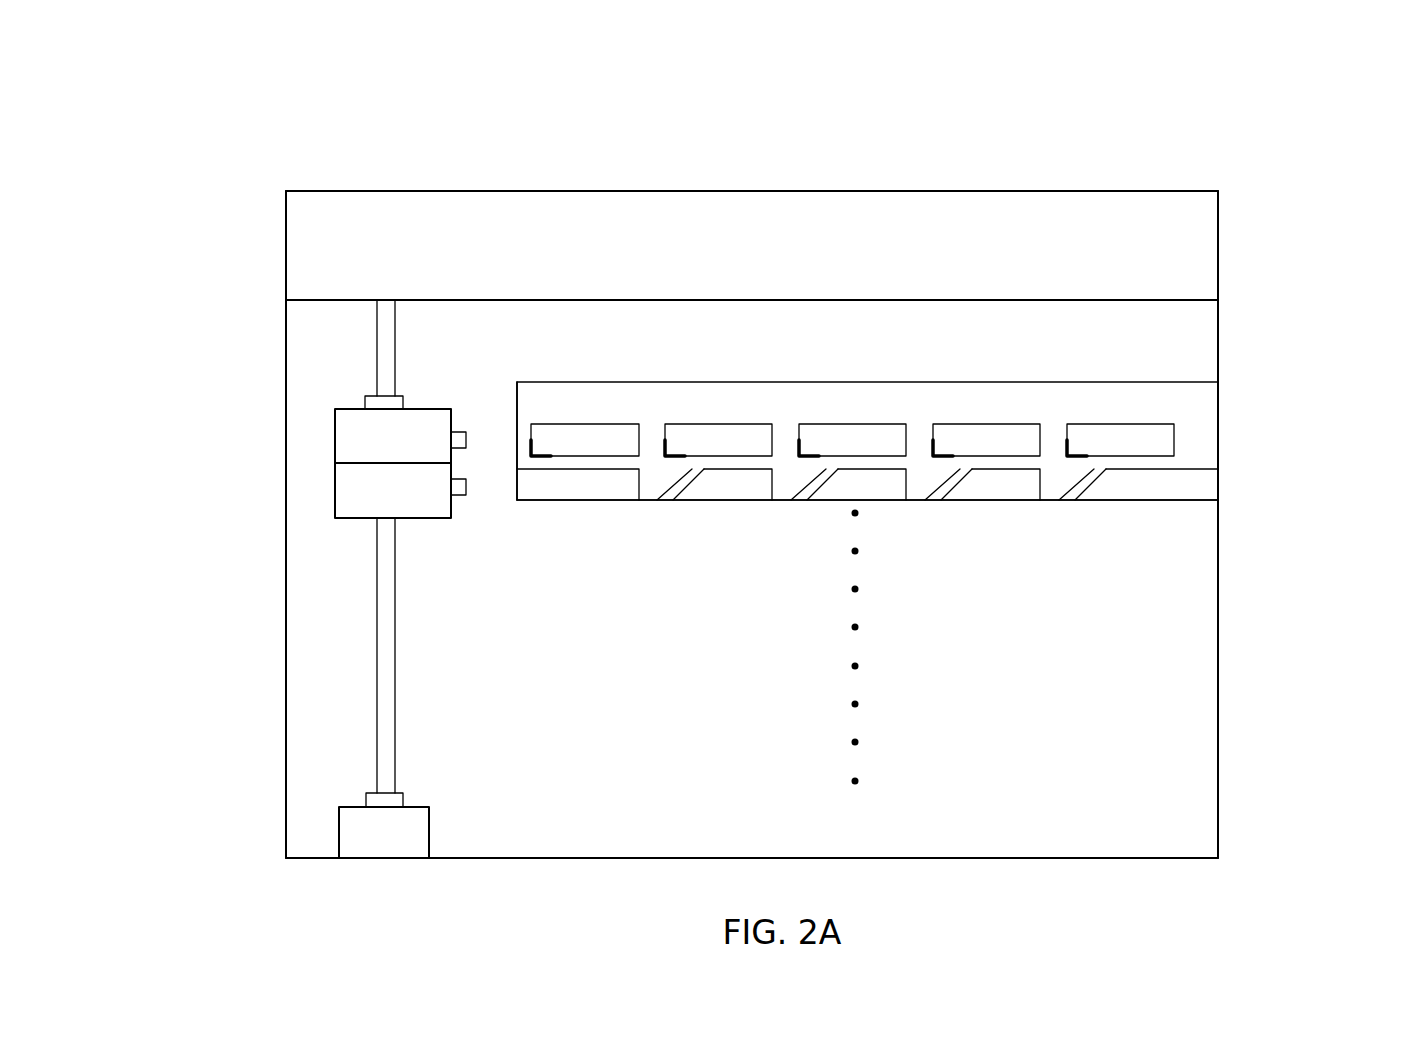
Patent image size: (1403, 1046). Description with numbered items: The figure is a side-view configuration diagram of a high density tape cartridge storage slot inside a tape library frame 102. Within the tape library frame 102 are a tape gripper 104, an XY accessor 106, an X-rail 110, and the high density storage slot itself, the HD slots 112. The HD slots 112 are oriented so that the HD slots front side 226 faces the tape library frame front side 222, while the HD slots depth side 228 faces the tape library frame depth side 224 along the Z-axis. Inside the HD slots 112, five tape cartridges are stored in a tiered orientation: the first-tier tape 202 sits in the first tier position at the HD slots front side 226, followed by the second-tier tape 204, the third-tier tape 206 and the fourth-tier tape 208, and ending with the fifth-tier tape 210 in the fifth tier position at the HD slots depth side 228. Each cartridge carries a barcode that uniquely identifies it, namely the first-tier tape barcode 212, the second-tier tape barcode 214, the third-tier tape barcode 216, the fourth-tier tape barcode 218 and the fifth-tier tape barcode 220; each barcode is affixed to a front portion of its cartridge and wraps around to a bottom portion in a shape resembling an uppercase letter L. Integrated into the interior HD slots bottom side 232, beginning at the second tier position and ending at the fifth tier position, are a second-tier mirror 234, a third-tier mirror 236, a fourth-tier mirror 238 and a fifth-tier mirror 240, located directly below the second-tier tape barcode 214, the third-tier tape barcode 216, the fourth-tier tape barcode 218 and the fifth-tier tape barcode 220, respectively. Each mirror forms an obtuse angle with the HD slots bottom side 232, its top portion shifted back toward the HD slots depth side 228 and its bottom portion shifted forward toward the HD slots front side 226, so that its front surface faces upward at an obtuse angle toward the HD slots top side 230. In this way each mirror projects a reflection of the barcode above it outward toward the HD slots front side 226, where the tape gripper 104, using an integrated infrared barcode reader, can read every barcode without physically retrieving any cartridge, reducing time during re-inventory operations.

The tape library frame 102 is at (286, 209).
The tape gripper 104 is at (335, 430).
The XY accessor 106 is at (377, 655).
The X-rail 110 is at (383, 847).
The HD slots 112 is at (557, 382).
The tier 1 tape 202 is at (586, 424).
The tier 2 tape 204 is at (717, 424).
The tier 3 tape 206 is at (851, 424).
The tier 4 tape 208 is at (985, 424).
The tier 5 tape 210 is at (1117, 424).
The tier 1 tape barcode 212 is at (530, 457).
The tier 2 tape barcode 214 is at (663, 455).
The tier 3 tape barcode 216 is at (797, 453).
The tier 4 tape barcode 218 is at (932, 456).
The tier 5 tape barcode 220 is at (1065, 457).
The tape library frame front side 222 is at (286, 522).
The tape library frame depth side 224 is at (1218, 213).
The HD slots front side 226 is at (517, 405).
The HD slots depth side 228 is at (1218, 362).
The HD slots top side 230 is at (1192, 300).
The HD slots bottom side 232 is at (1177, 500).
The tier 2 mirror 234 is at (689, 488).
The tier 3 mirror 236 is at (823, 480).
The tier 4 mirror 238 is at (960, 483).
The tier 5 mirror 240 is at (1088, 483).